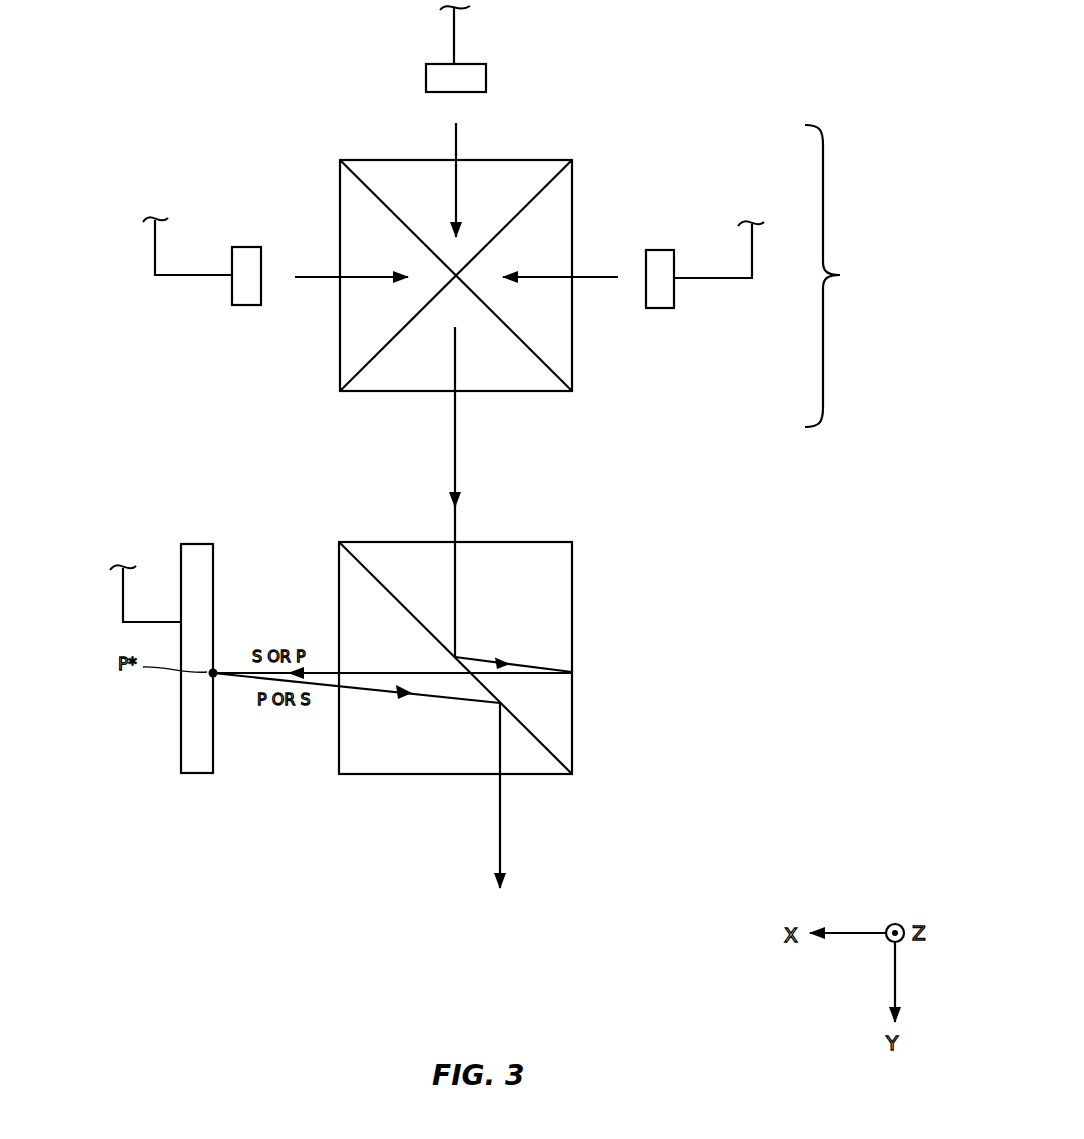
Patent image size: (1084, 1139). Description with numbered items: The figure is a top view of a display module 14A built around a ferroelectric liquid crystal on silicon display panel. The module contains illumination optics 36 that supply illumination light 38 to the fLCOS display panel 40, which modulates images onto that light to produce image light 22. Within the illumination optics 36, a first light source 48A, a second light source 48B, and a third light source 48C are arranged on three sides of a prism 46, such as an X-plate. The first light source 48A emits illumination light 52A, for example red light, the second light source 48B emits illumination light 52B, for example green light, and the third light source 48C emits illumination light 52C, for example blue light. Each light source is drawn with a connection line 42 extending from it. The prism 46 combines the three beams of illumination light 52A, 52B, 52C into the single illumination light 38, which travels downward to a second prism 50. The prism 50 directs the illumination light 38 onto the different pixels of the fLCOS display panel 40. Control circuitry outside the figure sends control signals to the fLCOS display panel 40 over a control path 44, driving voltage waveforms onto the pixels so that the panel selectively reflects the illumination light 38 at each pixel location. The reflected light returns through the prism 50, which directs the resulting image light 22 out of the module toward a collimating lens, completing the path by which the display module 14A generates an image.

The display module 14A is at (620, 880).
The image light 22 is at (501, 838).
The illumination optics 36 is at (837, 276).
The illumination light 38 is at (457, 452).
The fLCOS display panel 40 is at (200, 543).
The light source driver lines 42 is at (456, 40).
The control path 44 is at (123, 598).
The prism 46 is at (572, 160).
The first light source 48A is at (247, 232).
The second light source 48B is at (405, 82).
The third light source 48C is at (661, 235).
The prism 50 is at (565, 541).
The illumination light 52A is at (358, 279).
The illumination light 52B is at (455, 183).
The illumination light 52C is at (545, 280).